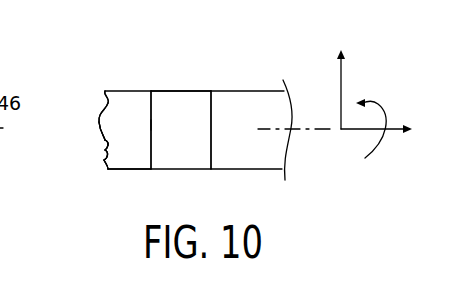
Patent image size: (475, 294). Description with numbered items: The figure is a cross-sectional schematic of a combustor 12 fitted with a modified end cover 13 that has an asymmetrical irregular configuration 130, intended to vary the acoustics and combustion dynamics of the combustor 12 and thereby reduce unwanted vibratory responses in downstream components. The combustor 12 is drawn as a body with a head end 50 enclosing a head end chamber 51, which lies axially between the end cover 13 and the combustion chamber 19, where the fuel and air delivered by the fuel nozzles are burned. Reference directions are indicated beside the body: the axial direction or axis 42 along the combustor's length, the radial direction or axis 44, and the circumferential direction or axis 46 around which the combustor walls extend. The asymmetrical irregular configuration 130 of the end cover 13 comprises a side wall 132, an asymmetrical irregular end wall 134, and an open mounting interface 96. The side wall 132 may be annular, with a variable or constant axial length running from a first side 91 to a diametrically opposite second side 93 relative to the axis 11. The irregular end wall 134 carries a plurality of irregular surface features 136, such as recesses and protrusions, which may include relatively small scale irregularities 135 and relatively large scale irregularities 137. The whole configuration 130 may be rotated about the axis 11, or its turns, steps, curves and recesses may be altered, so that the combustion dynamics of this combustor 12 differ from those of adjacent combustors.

The axis 11 is at (292, 130).
The combustor 12 is at (261, 55).
The end cover 13 is at (88, 108).
The combustion chamber 19 is at (246, 137).
The axial direction or axis 42 is at (357, 131).
The radial direction or axis 44 is at (340, 95).
The circumferential direction or axis 46 is at (381, 109).
The head end 50 is at (186, 72).
The head end chamber 51 is at (188, 137).
The first side 91 is at (151, 170).
The second side 93 is at (150, 91).
The open mounting interface 96 is at (153, 121).
The asymmetrical irregular configuration 130 is at (42, 169).
The side wall 132 is at (129, 169).
The asymmetrical irregular end wall 134 is at (87, 157).
The small scale irregularities 135 is at (100, 157).
The irregular surface features 136 is at (100, 131).
The large scale irregularities 137 is at (103, 93).